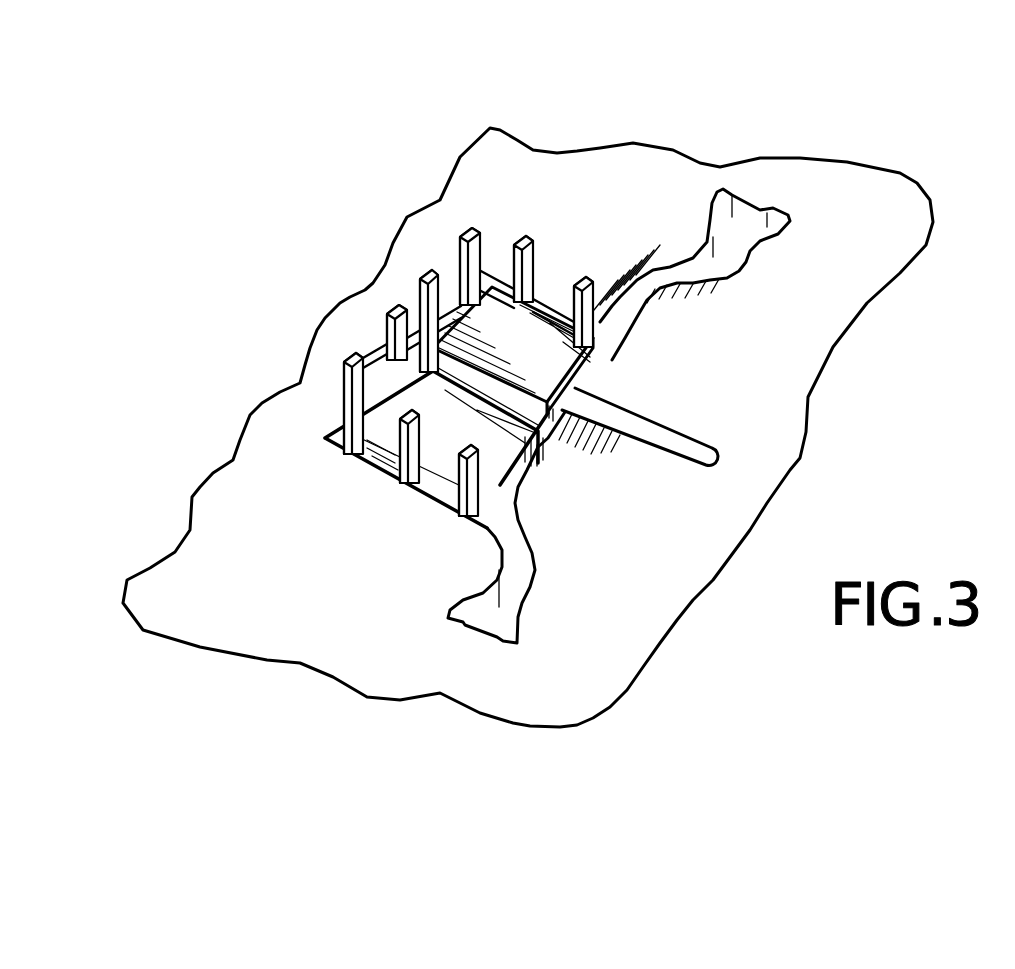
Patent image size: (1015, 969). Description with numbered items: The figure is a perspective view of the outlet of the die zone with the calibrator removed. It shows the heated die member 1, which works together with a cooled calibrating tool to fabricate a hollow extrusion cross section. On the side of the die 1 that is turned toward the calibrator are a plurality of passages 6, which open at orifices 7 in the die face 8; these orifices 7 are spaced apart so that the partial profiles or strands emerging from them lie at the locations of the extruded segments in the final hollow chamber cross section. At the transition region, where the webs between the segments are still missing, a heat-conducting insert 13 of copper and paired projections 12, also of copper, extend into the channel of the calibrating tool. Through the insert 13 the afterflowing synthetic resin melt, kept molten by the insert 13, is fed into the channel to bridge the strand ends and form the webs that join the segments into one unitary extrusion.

The die member 1 is at (148, 663).
The passages 6 is at (657, 280).
The orifices 7 is at (483, 280).
The die face 8 is at (240, 503).
The paired projections 12 is at (524, 245).
The heat-conducting insert 13 is at (452, 277).